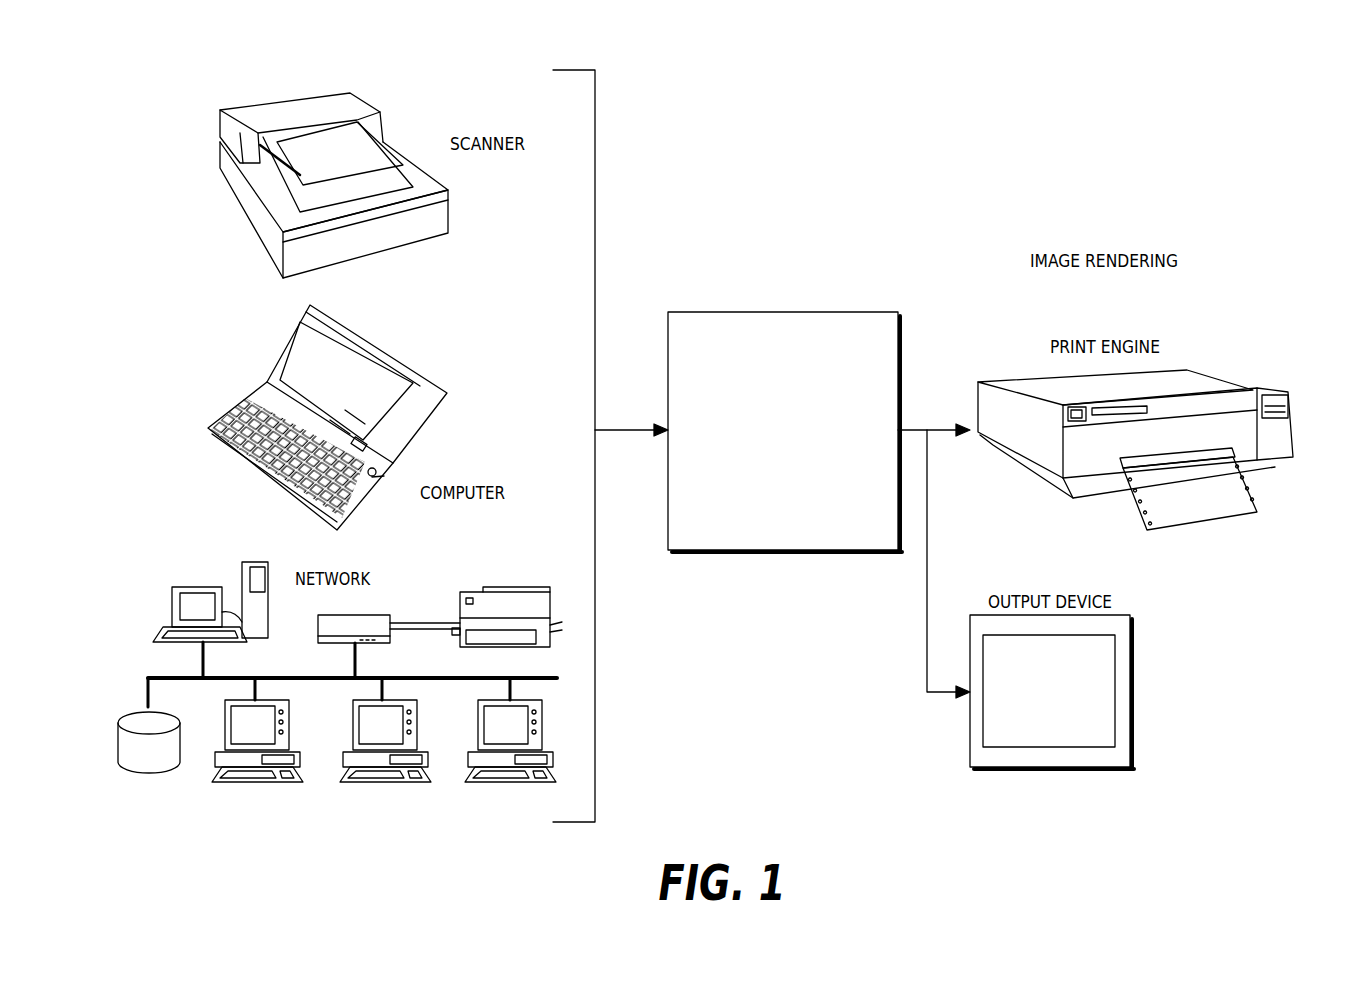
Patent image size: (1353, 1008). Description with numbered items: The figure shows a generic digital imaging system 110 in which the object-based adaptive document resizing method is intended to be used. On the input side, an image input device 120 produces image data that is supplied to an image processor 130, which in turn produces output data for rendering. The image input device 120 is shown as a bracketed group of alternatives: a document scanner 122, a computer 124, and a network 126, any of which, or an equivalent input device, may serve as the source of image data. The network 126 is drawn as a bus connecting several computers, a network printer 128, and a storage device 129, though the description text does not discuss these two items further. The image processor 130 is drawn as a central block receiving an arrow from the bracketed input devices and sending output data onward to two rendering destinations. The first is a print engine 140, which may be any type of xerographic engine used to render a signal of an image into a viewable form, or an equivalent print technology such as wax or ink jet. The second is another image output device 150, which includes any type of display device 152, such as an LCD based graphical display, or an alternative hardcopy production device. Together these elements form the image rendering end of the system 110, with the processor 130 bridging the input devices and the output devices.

The digital imaging system 110 is at (848, 152).
The image input device 120 is at (431, 433).
The document scanner 122 is at (407, 247).
The computer 124 is at (405, 362).
The network 126 is at (350, 802).
The network printer 128 is at (508, 587).
The database storage 129 is at (143, 773).
The image processor 130 is at (775, 555).
The print engine 140 is at (1103, 495).
The image output device 150 is at (1075, 712).
The display device 152 is at (1115, 693).